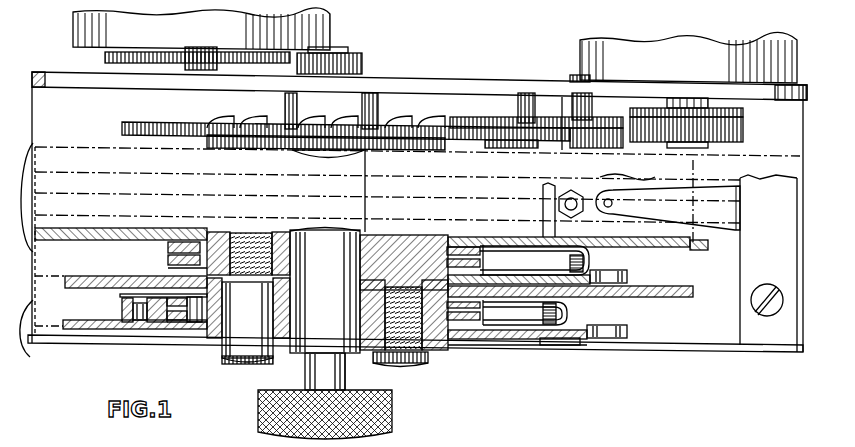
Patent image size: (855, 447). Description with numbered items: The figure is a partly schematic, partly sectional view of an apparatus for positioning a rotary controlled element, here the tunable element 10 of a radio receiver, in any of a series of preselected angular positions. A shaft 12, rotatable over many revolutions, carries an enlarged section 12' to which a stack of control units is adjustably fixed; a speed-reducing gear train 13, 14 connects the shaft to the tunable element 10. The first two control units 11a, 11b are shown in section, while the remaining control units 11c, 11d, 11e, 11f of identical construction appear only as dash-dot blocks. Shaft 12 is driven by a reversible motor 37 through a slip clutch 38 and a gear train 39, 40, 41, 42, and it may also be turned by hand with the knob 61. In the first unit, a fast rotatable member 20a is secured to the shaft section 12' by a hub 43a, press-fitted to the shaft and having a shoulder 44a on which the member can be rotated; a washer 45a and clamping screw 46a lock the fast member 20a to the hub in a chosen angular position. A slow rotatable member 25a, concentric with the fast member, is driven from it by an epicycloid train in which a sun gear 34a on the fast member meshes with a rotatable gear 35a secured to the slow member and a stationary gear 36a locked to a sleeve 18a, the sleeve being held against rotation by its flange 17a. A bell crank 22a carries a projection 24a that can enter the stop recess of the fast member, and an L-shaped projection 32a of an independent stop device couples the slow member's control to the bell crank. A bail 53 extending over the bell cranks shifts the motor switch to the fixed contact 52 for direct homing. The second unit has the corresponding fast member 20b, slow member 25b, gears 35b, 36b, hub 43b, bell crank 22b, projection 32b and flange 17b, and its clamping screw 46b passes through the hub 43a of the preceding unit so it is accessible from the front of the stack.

The tunable element 10 is at (90, 28).
The gear train 14 is at (108, 58).
The gear train 13 is at (356, 69).
The reversible motor 37 is at (588, 58).
The slip clutch 38 is at (737, 109).
The gear train 39 is at (732, 126).
The gear train 40 is at (498, 124).
The gear train 41 is at (498, 149).
The gear train 42 is at (443, 134).
The control unit 11b is at (32, 150).
The control unit 11a is at (40, 348).
The control unit 11f is at (417, 157).
The control unit 11e is at (387, 181).
The control unit 11d is at (387, 202).
The control unit 11c is at (387, 223).
The fast rotatable member 20b is at (67, 278).
The slow rotatable member 25b is at (167, 247).
The rotatable gear 35b is at (167, 259).
The stationary gear 36b is at (167, 268).
The hub 43b is at (378, 253).
The hub 43a is at (378, 297).
The shoulder 44a is at (222, 326).
The clamping screw 46b is at (245, 363).
The shaft 12 is at (314, 371).
The enlarged shaft section 12' is at (360, 365).
The knob 61 is at (262, 404).
The clamping screw 46a is at (412, 363).
The slow rotatable member 25a is at (120, 295).
The sun gear 34a is at (120, 312).
The fast rotatable member 20a is at (90, 330).
The rotatable gear 35a is at (172, 313).
The washer 45a is at (186, 305).
The stationary gear 36a is at (186, 320).
The sleeve 18a is at (455, 340).
The L-shaped projection 32b is at (589, 261).
The L-shaped projection 32a is at (565, 312).
The bell crank 22b is at (630, 281).
The bell crank 22a is at (612, 330).
The flange portion 17b is at (688, 248).
The flange portion 17a is at (697, 297).
The fixed contact 52 is at (636, 210).
The bail 53 is at (566, 341).
The projection 24a is at (578, 345).